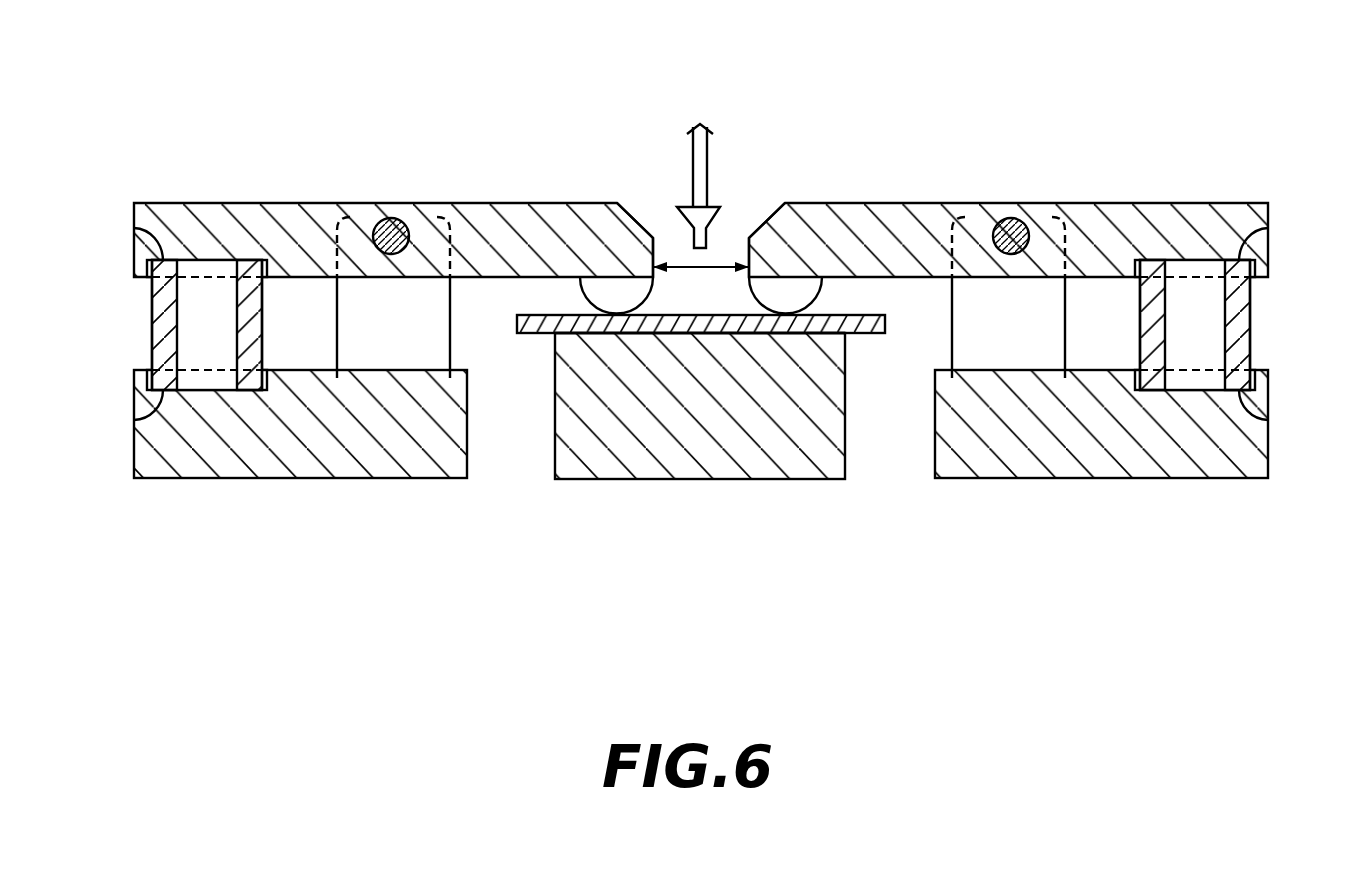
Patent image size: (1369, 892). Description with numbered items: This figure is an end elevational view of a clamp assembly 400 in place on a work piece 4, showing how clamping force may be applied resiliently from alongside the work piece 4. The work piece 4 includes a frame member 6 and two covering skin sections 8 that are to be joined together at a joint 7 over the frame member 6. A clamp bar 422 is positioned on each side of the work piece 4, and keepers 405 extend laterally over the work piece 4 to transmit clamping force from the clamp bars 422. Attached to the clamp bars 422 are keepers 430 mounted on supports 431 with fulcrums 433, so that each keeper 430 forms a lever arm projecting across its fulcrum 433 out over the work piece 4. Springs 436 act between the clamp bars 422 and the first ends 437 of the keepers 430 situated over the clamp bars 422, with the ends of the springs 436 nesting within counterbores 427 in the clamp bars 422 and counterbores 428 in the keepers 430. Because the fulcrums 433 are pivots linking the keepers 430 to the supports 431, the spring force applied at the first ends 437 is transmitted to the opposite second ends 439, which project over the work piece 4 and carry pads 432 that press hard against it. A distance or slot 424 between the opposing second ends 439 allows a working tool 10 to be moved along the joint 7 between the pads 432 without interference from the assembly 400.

The work piece 4 is at (786, 497).
The frame member 6 is at (845, 438).
The joint 7 is at (705, 338).
The covering skin sections 8 is at (537, 335).
The working tool 10 is at (707, 160).
The clamp assembly 400 is at (592, 553).
The keepers 405 is at (364, 78).
The clamp bars 422 is at (277, 478).
The distance or slot 424 is at (727, 263).
The counterbores 427 is at (134, 420).
The counterbores 428 is at (134, 228).
The keepers 430 is at (540, 203).
The supports 431 is at (348, 316).
The pads 432 is at (580, 296).
The fulcrums 433 is at (405, 220).
The springs 436 is at (152, 315).
The first ends 437 is at (116, 156).
The second ends 439 is at (630, 130).